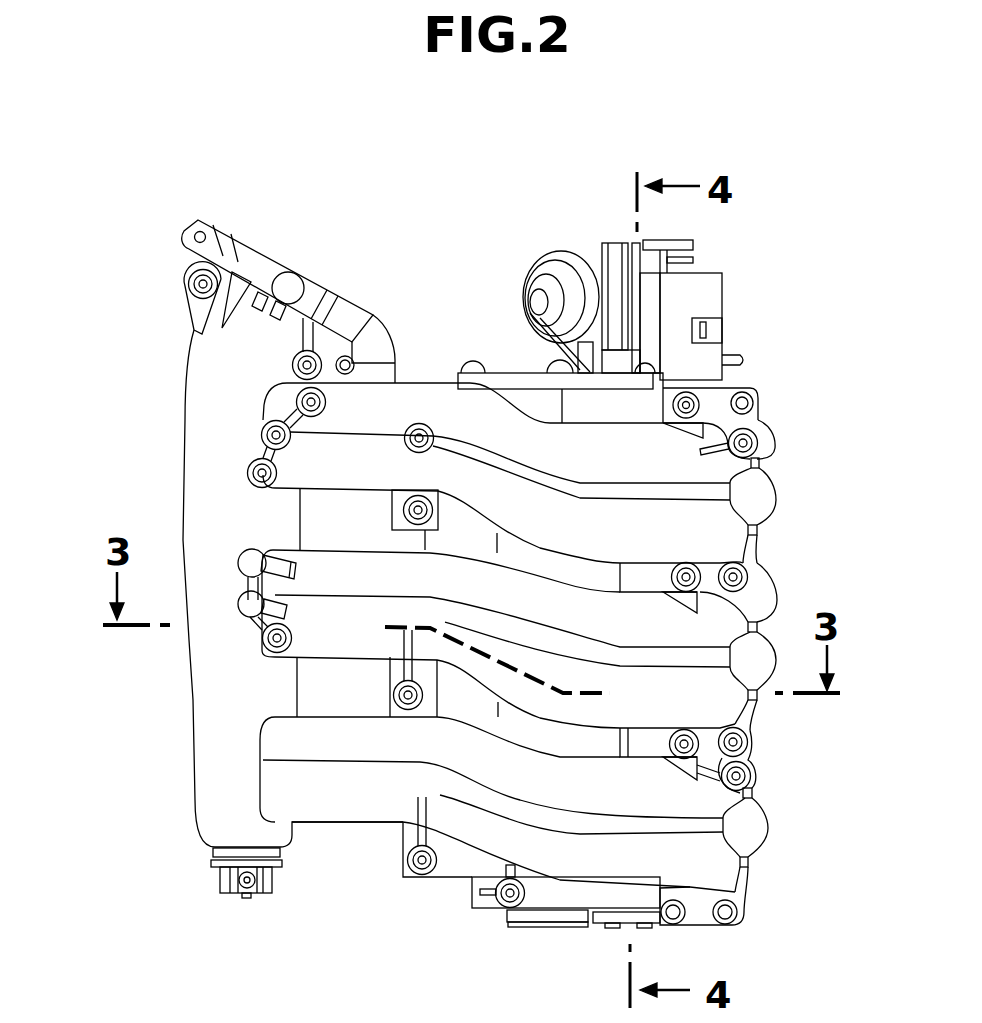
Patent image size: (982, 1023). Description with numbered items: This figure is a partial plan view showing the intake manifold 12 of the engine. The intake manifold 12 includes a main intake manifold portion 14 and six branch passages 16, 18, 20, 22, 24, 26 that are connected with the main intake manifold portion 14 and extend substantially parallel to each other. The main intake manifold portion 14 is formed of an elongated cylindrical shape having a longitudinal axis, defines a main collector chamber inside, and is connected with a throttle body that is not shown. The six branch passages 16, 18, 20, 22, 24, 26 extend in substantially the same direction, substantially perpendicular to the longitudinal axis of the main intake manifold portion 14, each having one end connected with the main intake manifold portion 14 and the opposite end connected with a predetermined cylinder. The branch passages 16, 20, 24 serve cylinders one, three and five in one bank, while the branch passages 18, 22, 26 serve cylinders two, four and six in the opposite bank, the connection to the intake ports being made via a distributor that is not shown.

The intake manifold 12 is at (175, 842).
The main intake manifold portion 14 is at (203, 512).
The branch passage 16 is at (715, 873).
The branch passage 18 is at (710, 797).
The branch passage 20 is at (725, 703).
The branch passage 22 is at (723, 610).
The branch passage 24 is at (723, 518).
The branch passage 26 is at (720, 433).